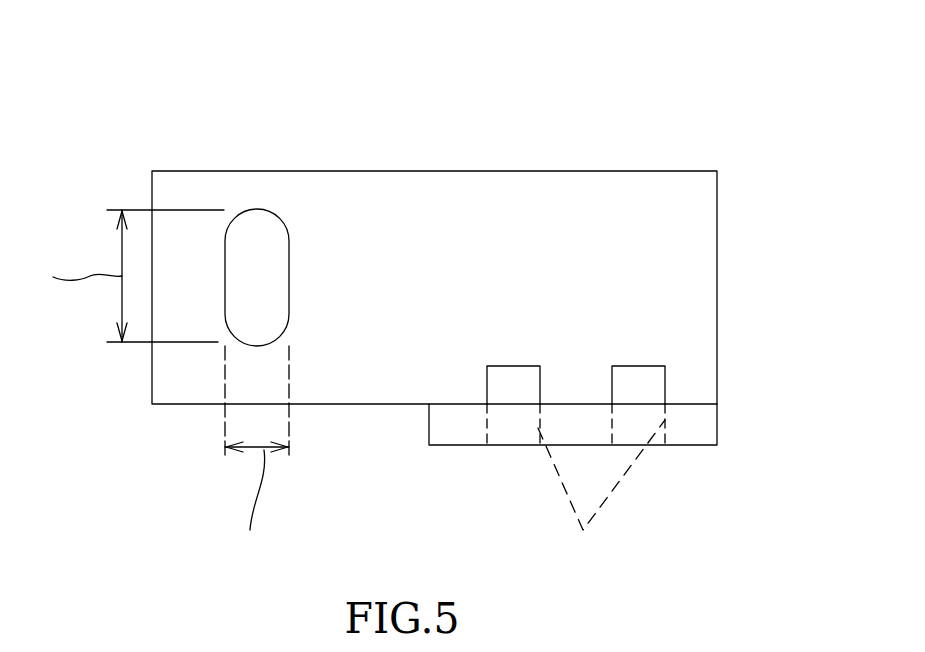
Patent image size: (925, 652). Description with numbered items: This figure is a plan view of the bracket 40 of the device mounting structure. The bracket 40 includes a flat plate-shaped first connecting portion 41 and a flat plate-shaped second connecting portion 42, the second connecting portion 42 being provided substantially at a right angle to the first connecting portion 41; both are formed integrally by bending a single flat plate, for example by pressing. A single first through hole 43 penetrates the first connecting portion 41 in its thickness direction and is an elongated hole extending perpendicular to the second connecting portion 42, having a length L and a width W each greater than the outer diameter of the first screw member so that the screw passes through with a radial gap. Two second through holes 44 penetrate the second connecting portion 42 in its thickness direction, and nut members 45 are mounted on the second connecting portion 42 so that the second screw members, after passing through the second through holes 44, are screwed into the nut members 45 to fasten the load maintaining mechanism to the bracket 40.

The bracket 40 is at (699, 107).
The first connecting portion 41 is at (437, 196).
The second connecting portion 42 is at (448, 428).
The first through hole 43 is at (258, 210).
The second through holes 44 is at (601, 491).
The nut members 45 is at (640, 365).